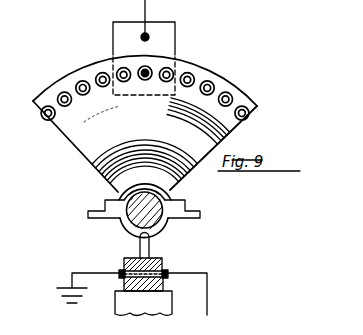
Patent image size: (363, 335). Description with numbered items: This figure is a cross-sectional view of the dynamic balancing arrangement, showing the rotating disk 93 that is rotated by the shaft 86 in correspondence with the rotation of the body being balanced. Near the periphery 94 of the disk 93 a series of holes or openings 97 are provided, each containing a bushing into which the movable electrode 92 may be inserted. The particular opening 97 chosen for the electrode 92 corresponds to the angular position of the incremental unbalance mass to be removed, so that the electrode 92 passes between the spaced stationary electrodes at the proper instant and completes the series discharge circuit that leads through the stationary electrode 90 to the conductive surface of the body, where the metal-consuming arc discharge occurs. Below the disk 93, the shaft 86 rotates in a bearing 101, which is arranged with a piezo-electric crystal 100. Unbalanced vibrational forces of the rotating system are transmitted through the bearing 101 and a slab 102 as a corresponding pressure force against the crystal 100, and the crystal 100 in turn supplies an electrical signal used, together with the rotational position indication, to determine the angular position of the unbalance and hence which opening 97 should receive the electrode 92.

The electrode 90 is at (149, 37).
The movable electrode 92 is at (145, 77).
The periphery 94 is at (49, 86).
The holes or openings 97 is at (98, 89).
The rotating disk 93 is at (80, 152).
The shaft 86 is at (128, 198).
The bearing 101 is at (114, 212).
The slab 102 is at (151, 244).
The piezo-electric crystal 100 is at (164, 272).